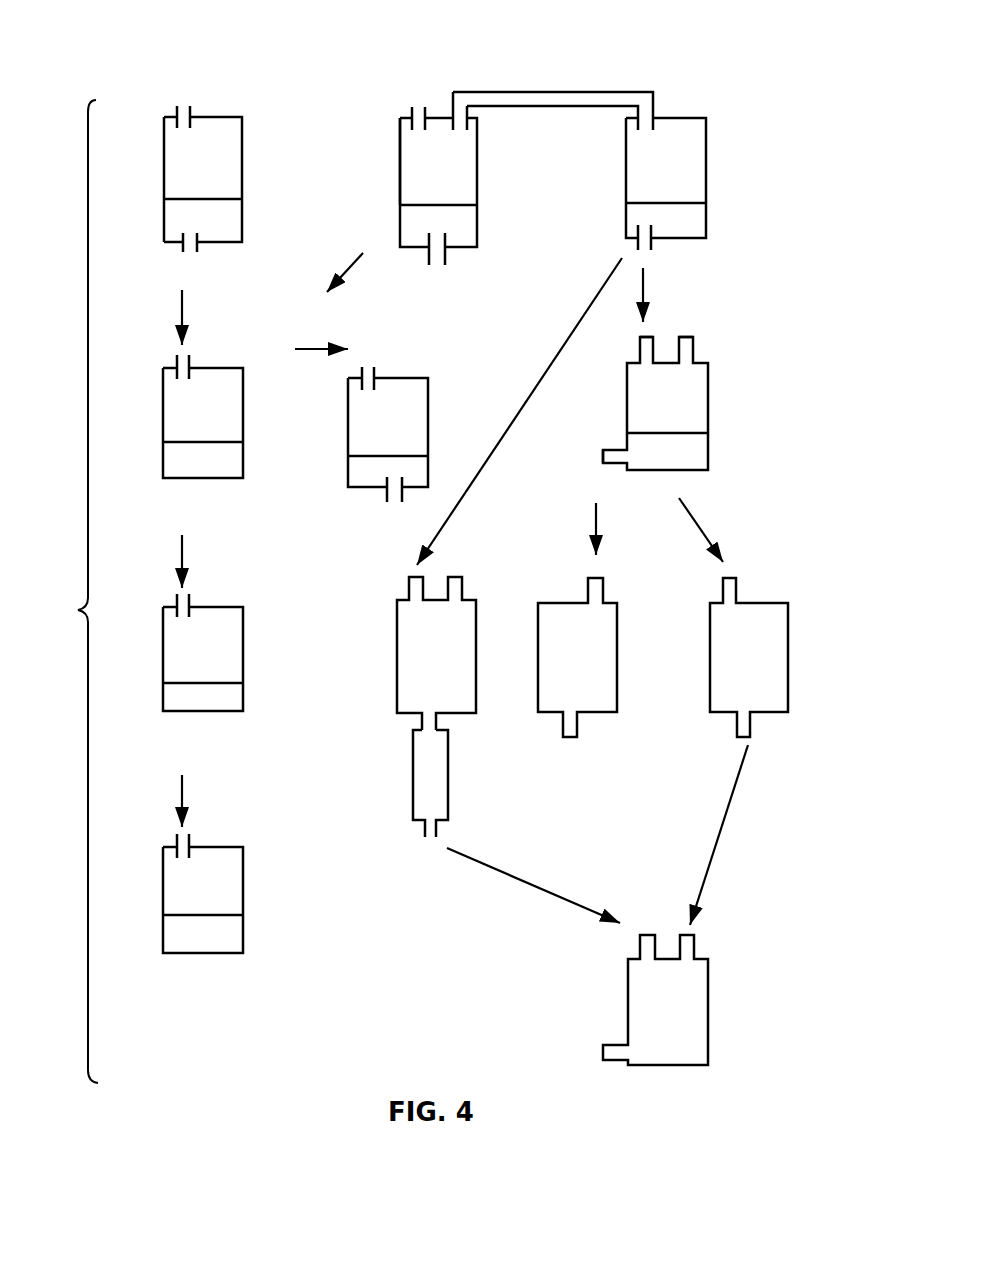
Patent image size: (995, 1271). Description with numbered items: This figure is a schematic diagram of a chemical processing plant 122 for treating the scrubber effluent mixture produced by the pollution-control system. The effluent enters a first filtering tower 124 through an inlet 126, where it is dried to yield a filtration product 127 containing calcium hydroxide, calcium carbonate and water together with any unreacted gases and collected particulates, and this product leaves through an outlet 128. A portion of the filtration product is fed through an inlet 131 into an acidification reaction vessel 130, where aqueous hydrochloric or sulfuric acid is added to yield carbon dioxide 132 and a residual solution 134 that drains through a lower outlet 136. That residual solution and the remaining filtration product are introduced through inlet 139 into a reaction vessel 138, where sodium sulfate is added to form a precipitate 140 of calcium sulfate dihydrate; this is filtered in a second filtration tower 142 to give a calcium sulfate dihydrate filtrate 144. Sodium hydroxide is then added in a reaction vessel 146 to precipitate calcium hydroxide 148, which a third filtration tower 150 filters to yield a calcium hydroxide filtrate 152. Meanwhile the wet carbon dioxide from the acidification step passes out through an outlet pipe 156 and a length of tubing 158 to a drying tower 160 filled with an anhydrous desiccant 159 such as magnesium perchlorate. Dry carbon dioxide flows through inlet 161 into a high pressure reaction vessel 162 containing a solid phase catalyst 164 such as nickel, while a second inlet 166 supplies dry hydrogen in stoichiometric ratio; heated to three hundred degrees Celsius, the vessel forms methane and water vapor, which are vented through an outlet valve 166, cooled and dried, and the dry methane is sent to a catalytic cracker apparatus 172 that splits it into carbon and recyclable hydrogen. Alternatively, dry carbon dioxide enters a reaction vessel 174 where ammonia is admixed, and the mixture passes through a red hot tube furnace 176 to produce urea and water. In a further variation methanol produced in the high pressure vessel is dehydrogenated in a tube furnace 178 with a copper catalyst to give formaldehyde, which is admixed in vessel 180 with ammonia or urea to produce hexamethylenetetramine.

The chemical processing plant 122 is at (55, 591).
The first filtering tower 124 is at (275, 160).
The inlet 126 is at (192, 110).
The filtration product 127 is at (223, 222).
The outlet 128 is at (199, 247).
The acidification reaction vessel 130 is at (480, 180).
The inlet 131 is at (410, 108).
The carbon dioxide 132 is at (432, 155).
The residual solution 134 is at (473, 220).
The lower outlet 136 is at (447, 255).
The reaction vessel 138 is at (250, 410).
The inlet 139 is at (177, 362).
The precipitate 140 is at (223, 460).
The second filtration tower 142 is at (432, 420).
The calcium sulfate dihydrate filtrate 144 is at (372, 484).
The reaction vessel 146 is at (243, 650).
The calcium hydroxide 148 is at (235, 693).
The third filtration tower 150 is at (265, 895).
The calcium hydroxide filtrate 152 is at (235, 933).
The outlet pipe 156 is at (445, 106).
The tubing 158 is at (590, 92).
The anhydrous desiccant 159 is at (700, 213).
The drying tower 160 is at (716, 175).
The inlet 161 is at (640, 348).
The high pressure reaction vessel 162 is at (715, 405).
The solid phase catalyst 164 is at (705, 443).
The second inlet / outlet valve 166 is at (695, 342).
The catalytic cracker apparatus 172 is at (620, 665).
The reaction vessel 174 is at (395, 635).
The red hot tube furnace 176 is at (412, 770).
The tube furnace 178 is at (790, 650).
The vessel 180 is at (712, 1007).